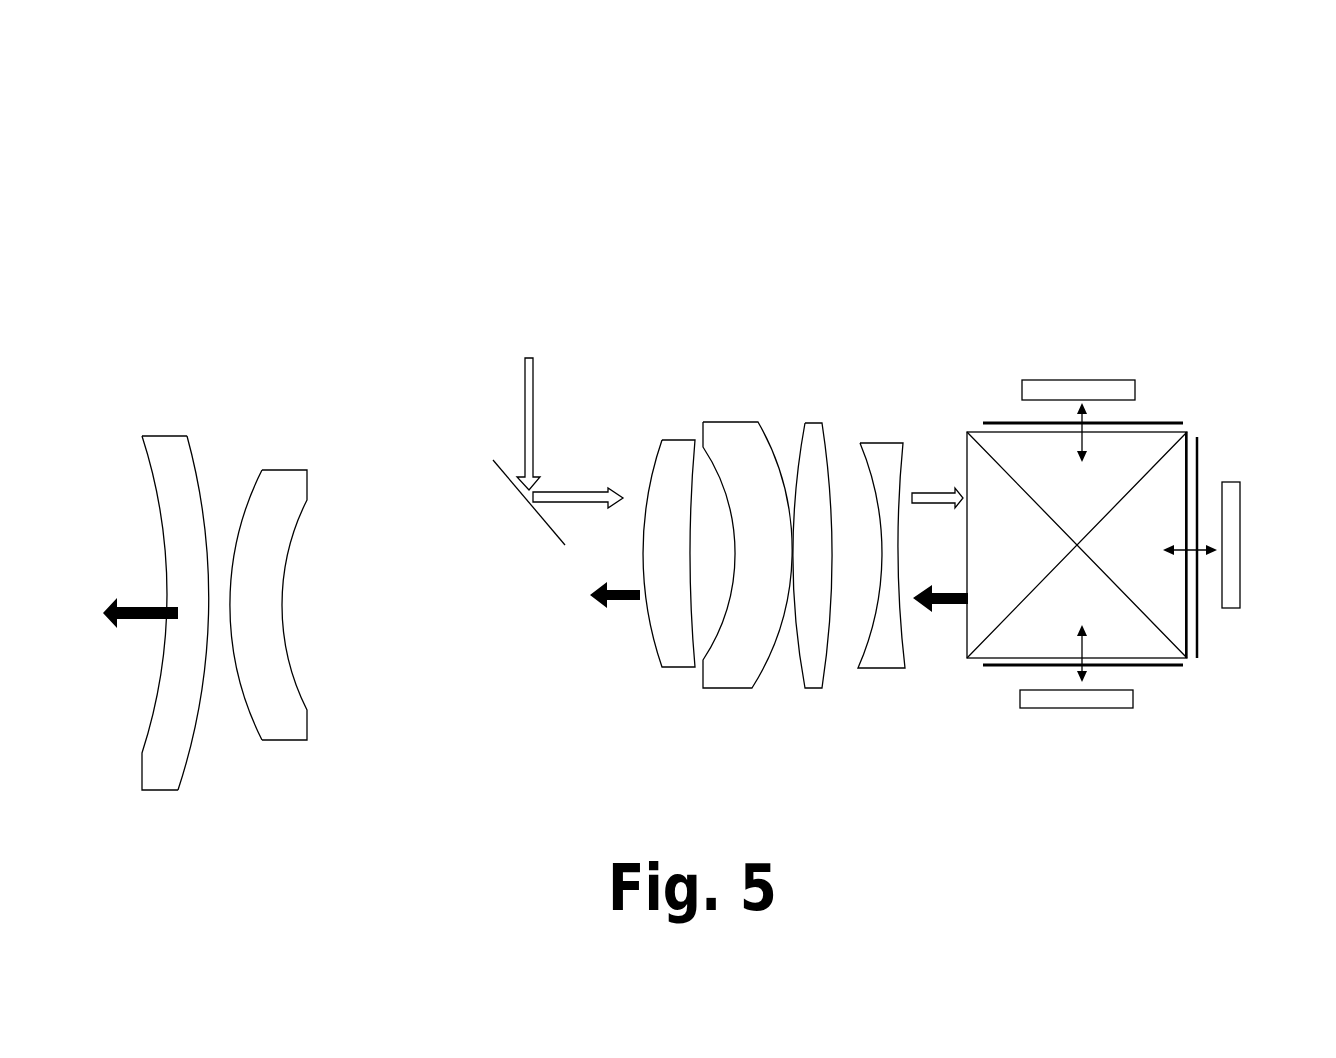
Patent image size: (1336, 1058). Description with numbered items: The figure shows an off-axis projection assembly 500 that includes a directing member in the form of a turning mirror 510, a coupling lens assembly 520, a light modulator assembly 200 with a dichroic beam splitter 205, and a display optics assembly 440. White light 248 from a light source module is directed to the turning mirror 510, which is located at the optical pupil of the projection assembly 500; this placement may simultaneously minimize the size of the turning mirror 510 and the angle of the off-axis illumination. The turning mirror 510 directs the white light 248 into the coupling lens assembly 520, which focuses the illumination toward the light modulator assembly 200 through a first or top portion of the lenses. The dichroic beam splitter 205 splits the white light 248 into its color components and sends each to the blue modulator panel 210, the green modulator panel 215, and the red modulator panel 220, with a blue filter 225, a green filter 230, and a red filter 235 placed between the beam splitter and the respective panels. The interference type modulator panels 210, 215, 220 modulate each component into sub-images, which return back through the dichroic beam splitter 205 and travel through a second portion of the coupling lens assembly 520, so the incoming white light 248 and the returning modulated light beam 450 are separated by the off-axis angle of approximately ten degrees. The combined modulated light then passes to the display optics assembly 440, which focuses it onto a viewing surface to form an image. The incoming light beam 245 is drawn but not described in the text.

The off-axis projection assembly 500 is at (464, 160).
The display optics assembly 440 is at (232, 343).
The illumination light 245 is at (531, 398).
The turning mirror 510 is at (524, 507).
The coupling lens assembly 520 is at (783, 388).
The white light 248 is at (932, 490).
The modulated light beam 450 is at (942, 605).
The light modulator assembly 200 is at (1056, 302).
The dichroic beam splitter 205 is at (967, 658).
The red modulator panel 220 is at (1078, 378).
The blue modulator panel 210 is at (1070, 710).
The green modulator panel 215 is at (1240, 545).
The red filter 235 is at (1158, 417).
The blue filter 225 is at (1162, 672).
The green filter 230 is at (1200, 445).